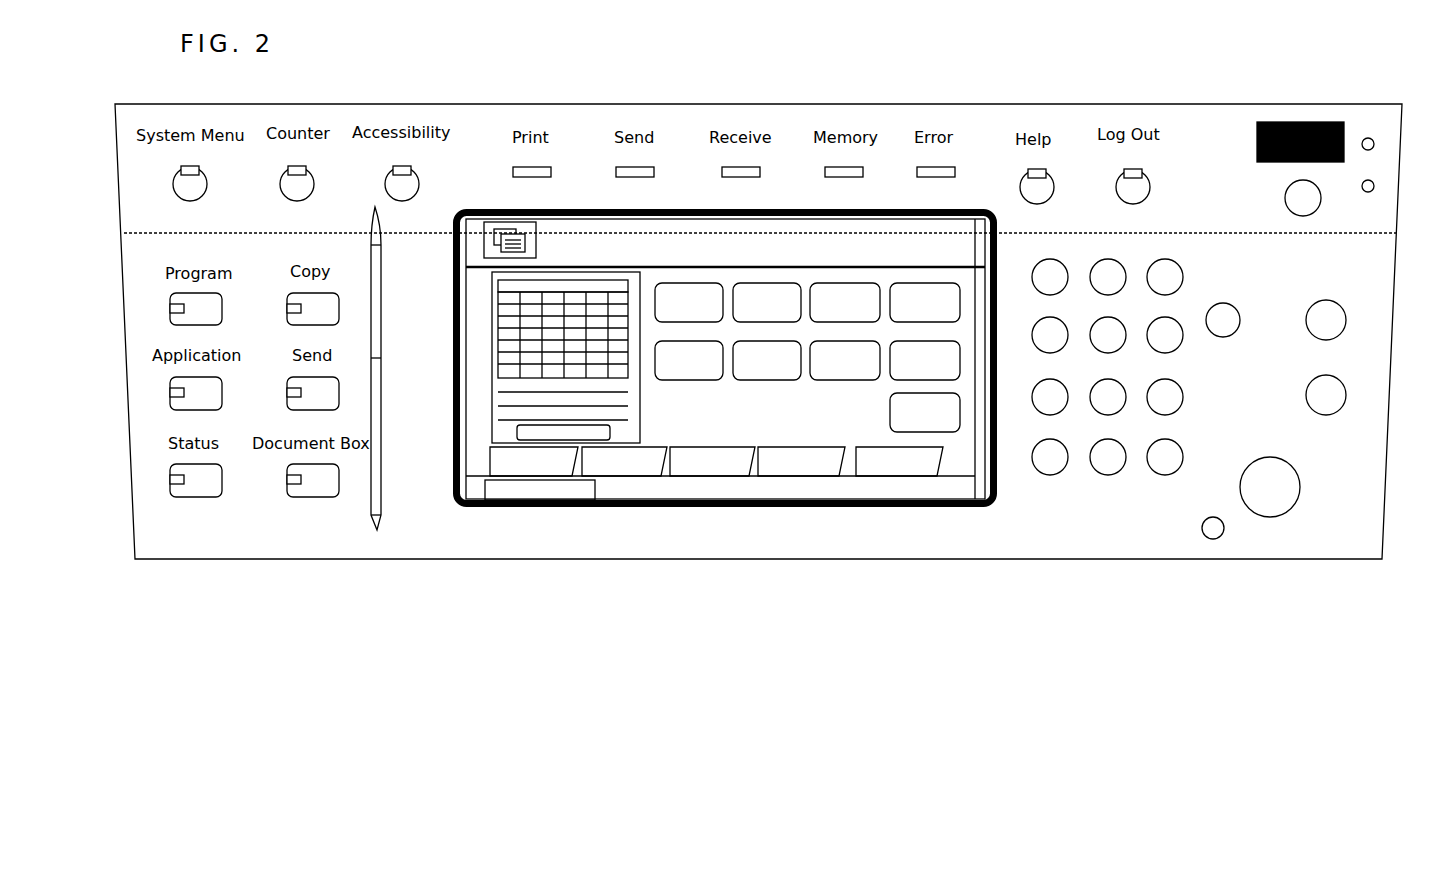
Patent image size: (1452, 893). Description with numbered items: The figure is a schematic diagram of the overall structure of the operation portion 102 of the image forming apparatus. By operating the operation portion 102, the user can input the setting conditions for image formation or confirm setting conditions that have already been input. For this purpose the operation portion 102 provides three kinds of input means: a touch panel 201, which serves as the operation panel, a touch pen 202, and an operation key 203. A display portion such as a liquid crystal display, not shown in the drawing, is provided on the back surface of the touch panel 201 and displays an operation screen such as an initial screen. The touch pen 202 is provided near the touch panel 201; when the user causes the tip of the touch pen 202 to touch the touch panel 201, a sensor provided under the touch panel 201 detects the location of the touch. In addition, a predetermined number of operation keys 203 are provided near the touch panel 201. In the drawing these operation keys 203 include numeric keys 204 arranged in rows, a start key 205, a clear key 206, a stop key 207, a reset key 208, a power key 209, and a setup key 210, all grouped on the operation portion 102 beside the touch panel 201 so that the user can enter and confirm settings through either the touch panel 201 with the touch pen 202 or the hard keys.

The operation portion 102 is at (768, 572).
The touch panel 201 is at (559, 552).
The touch pen 202 is at (377, 530).
The operation key 203 is at (1176, 448).
The numeric keys 204 is at (1101, 507).
The start key 205 is at (1270, 495).
The clear key 206 is at (1218, 337).
The stop key 207 is at (1326, 405).
The reset key 208 is at (1328, 330).
The power key 209 is at (1312, 207).
The setup key 210 is at (1213, 533).